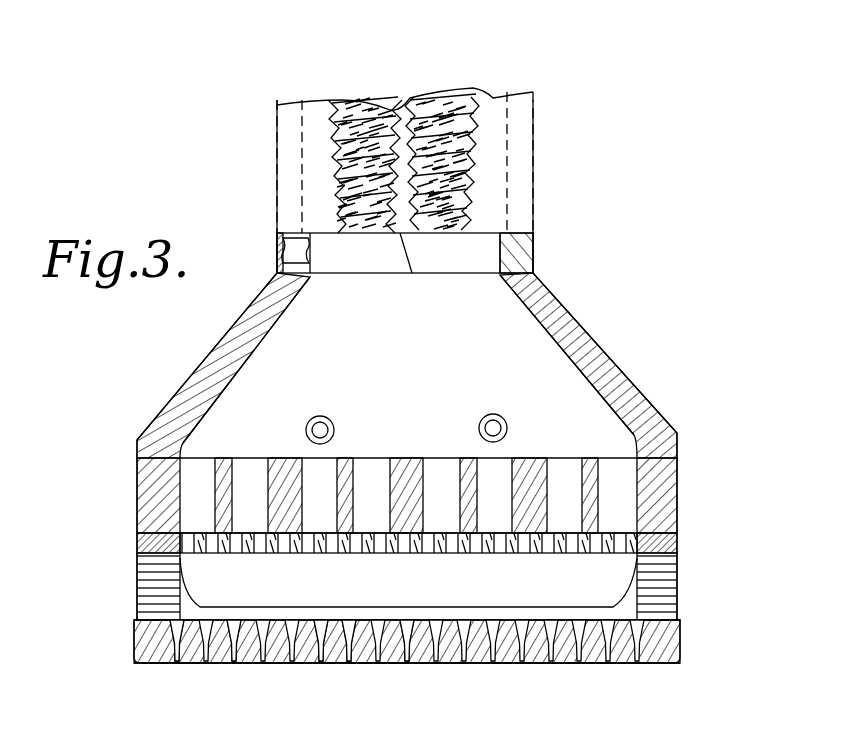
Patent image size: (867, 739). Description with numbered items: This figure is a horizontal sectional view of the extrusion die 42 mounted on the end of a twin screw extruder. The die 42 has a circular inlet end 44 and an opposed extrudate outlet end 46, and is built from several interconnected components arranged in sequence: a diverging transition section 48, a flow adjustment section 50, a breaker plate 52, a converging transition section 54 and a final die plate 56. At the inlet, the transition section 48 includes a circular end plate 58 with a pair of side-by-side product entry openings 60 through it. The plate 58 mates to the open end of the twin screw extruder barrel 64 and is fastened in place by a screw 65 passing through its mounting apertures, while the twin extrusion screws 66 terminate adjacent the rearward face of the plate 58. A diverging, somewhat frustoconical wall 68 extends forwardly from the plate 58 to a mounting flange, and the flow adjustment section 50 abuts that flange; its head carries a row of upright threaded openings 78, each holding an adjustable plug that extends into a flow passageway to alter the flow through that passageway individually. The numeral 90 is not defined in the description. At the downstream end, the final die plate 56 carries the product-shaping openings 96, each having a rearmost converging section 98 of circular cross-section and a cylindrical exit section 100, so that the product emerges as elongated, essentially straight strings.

The extrusion die 42 is at (648, 290).
The circular inlet end 44 is at (499, 126).
The extrudate outlet end 46 is at (498, 673).
The diverging transition section 48 is at (638, 388).
The flow adjustment section 50 is at (667, 487).
The breaker plate 52 is at (672, 548).
The converging transition section 54 is at (665, 585).
The final die plate 56 is at (680, 655).
The circular end plate 58 is at (520, 260).
The product entry openings 60 is at (432, 262).
The twin screw extruder barrel 64 is at (538, 143).
The screw 65 is at (305, 272).
The twin extrusion screws 66 is at (370, 92).
The diverging frustoconical wall 68 is at (542, 325).
The threaded openings 78 is at (418, 679).
The nozzle passage 90 is at (335, 679).
The product-shaping openings 96 is at (177, 665).
The converging section 98 is at (315, 665).
The cylindrical exit section 100 is at (237, 665).